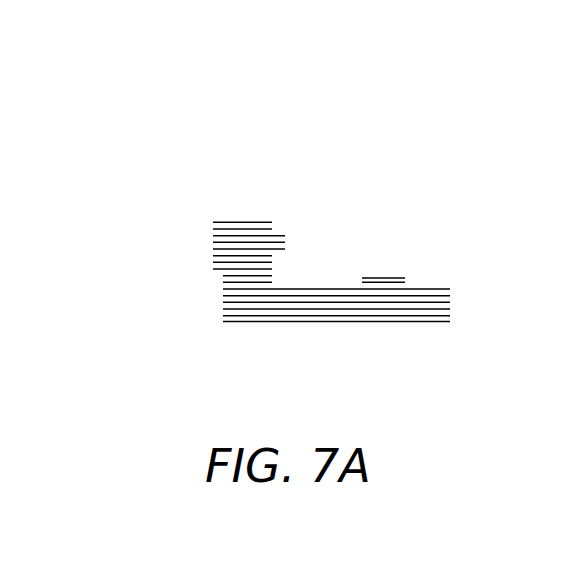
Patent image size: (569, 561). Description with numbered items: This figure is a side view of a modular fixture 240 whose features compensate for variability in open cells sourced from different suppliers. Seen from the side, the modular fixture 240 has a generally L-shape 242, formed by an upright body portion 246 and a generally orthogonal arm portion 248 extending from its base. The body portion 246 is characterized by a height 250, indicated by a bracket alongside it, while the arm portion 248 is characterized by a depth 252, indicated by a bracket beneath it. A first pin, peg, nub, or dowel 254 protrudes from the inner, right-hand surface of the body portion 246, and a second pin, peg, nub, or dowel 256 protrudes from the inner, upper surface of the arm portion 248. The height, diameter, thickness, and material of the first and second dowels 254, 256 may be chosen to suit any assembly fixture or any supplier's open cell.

The L-shape 242 is at (378, 137).
The modular fixture 240 is at (245, 220).
The first pin, peg, nub, or dowel 254 is at (285, 243).
The body portion 246 is at (223, 297).
The second pin, peg, nub, or dowel 256 is at (405, 282).
The arm portion 248 is at (450, 307).
The height 250 is at (115, 230).
The depth 252 is at (448, 345).